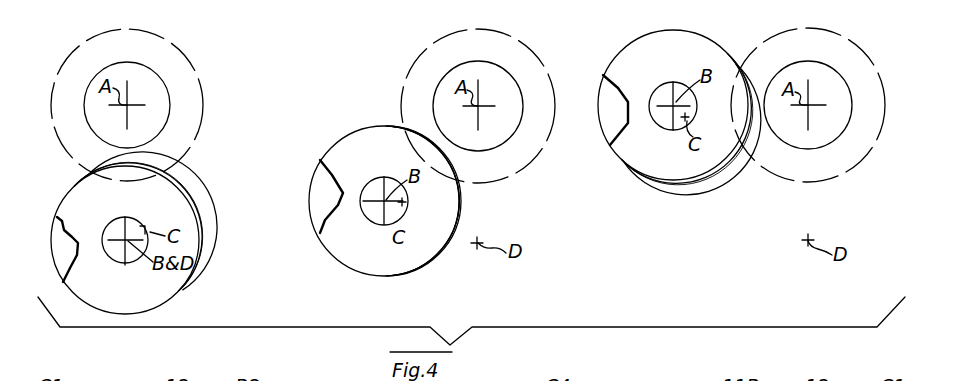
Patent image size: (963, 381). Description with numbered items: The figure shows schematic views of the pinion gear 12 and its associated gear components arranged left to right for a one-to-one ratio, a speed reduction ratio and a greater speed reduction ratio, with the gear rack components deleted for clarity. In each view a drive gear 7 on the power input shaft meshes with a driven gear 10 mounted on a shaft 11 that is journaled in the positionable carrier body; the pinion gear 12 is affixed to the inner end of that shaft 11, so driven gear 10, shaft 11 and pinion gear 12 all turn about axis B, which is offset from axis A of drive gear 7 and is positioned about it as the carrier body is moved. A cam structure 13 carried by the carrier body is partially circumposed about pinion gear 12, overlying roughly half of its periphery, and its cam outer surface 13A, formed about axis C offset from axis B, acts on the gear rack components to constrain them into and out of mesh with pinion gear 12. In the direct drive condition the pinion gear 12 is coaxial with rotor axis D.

The drive gear 7 is at (180, 66).
The driven gear 10 is at (70, 204).
The shaft 11 is at (118, 262).
The pinion gear 12 is at (55, 236).
The cam structure 13 is at (198, 184).
The cam outer surface 13A is at (215, 207).